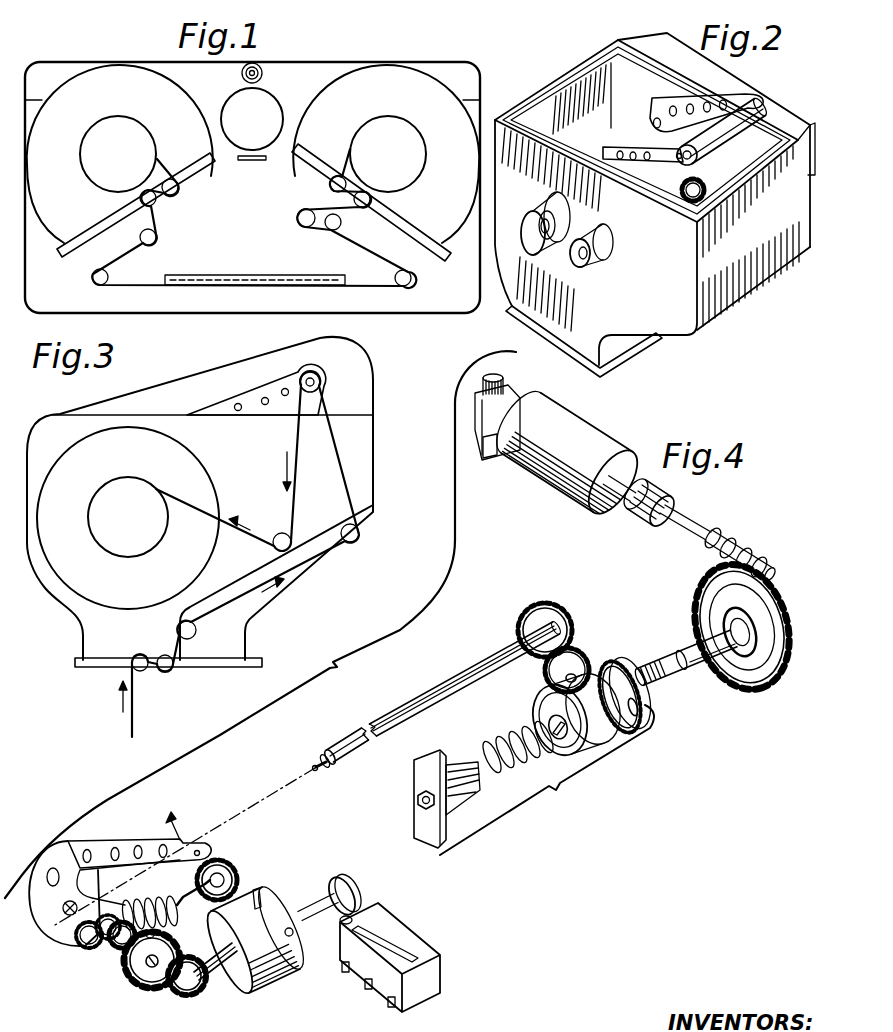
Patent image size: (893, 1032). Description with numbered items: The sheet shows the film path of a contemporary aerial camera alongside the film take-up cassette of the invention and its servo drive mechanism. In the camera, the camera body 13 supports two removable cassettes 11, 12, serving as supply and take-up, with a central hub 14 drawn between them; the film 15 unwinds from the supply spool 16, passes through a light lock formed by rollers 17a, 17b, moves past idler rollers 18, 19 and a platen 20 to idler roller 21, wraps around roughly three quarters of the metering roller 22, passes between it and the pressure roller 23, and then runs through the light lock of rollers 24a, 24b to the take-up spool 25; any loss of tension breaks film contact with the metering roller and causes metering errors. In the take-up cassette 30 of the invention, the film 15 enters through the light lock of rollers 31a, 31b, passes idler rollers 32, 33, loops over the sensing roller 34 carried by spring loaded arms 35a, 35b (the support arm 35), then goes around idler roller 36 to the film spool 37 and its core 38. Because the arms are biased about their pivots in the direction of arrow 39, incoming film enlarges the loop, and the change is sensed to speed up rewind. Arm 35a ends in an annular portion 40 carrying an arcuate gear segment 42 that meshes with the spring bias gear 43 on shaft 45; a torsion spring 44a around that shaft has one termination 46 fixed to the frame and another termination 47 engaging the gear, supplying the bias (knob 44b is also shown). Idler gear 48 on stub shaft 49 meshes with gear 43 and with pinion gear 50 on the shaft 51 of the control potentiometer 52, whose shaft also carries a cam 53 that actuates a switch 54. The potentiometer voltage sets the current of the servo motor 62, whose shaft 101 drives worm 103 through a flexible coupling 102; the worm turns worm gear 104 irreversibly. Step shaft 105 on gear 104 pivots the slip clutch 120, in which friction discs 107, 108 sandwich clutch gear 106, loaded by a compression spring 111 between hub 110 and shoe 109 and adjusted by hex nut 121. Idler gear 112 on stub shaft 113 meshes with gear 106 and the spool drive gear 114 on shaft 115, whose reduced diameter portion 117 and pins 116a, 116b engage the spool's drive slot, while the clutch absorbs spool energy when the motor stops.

In FIG. 1, the supply cassette 11 is at (130, 75).
In FIG. 1, the take-up cassette 12 is at (385, 75).
In FIG. 1, the camera body 13 is at (316, 62).
In FIG. 1, the capstan hub 14 is at (262, 103).
In FIG. 1, the film 15 is at (140, 256).
In FIG. 3, the film 15 is at (343, 437).
In FIG. 1, the supply spool 16 is at (129, 154).
In FIG. 1, the light lock roller 17a is at (158, 203).
In FIG. 1, the light lock roller 17b is at (180, 190).
In FIG. 1, the idler roller 18 is at (140, 238).
In FIG. 1, the idler roller 19 is at (109, 277).
In FIG. 1, the platen 20 is at (232, 277).
In FIG. 1, the idler roller 21 is at (395, 278).
In FIG. 1, the metering roller 22 is at (297, 220).
In FIG. 1, the pressure roller 23 is at (340, 227).
In FIG. 1, the light lock roller 24a is at (330, 186).
In FIG. 1, the light lock roller 24b is at (371, 199).
In FIG. 1, the take-up spool 25 is at (399, 154).
In FIG. 2, the cassette 30 is at (755, 283).
In FIG. 3, the cassette 30 is at (310, 583).
In FIG. 4, the cassette 30 is at (224, 871).
In FIG. 3, the light lock roller 31a is at (145, 672).
In FIG. 3, the light lock roller 31b is at (158, 655).
In FIG. 3, the idler roller 32 is at (196, 633).
In FIG. 3, the idler roller 33 is at (343, 530).
In FIG. 2, the sensing roller 34 is at (770, 101).
In FIG. 3, the sensing roller 34 is at (322, 390).
In FIG. 3, the sensing roller support arm 35 is at (258, 395).
In FIG. 2, the sensing roller support arm 35a is at (713, 98).
In FIG. 4, the sensing roller support arm 35a is at (100, 840).
In FIG. 2, the sensing roller support arm 35b is at (620, 148).
In FIG. 3, the idler roller 36 is at (280, 533).
In FIG. 3, the film spool 37 is at (190, 458).
In FIG. 3, the core 38 is at (137, 545).
In FIG. 3, the arrow 39 is at (314, 372).
In FIG. 4, the arrow 39 is at (180, 826).
In FIG. 4, the annular portion 40 is at (60, 903).
In FIG. 4, the arcuate gear segment 42 is at (88, 950).
In FIG. 2, the spring bias gear 43 is at (704, 186).
In FIG. 4, the spring bias gear 43 is at (118, 955).
In FIG. 2, the torsion spring 44a is at (545, 223).
In FIG. 4, the torsion spring 44a is at (171, 937).
In FIG. 2, the knob 44b is at (585, 263).
In FIG. 4, the shaft 45 is at (104, 948).
In FIG. 4, the spring termination 46 is at (193, 887).
In FIG. 4, the spring termination 47 is at (134, 906).
In FIG. 4, the idler gear 48 is at (135, 968).
In FIG. 4, the stub shaft 49 is at (150, 975).
In FIG. 4, the pinion gear 50 is at (184, 990).
In FIG. 4, the potentiometer shaft 51 is at (218, 988).
In FIG. 4, the control potentiometer 52 is at (242, 988).
In FIG. 4, the cam 53 is at (363, 897).
In FIG. 4, the switch 54 is at (410, 941).
In FIG. 4, the servo motor 62 is at (533, 473).
In FIG. 4, the motor shaft 101 is at (613, 487).
In FIG. 4, the flexible coupling 102 is at (662, 495).
In FIG. 4, the worm 103 is at (747, 547).
In FIG. 4, the worm gear 104 is at (697, 586).
In FIG. 4, the step shaft 105 is at (683, 667).
In FIG. 4, the clutch gear 106 is at (638, 704).
In FIG. 4, the friction disc 107 is at (626, 668).
In FIG. 4, the friction disc 108 is at (540, 700).
In FIG. 4, the shoe 109 is at (546, 726).
In FIG. 4, the hub 110 is at (458, 767).
In FIG. 4, the compression spring 111 is at (493, 743).
In FIG. 4, the idler gear 112 is at (585, 655).
In FIG. 4, the stub shaft 113 is at (565, 680).
In FIG. 4, the spool drive gear 114 is at (553, 605).
In FIG. 4, the shaft 115 is at (482, 665).
In FIG. 4, the pin 116a is at (327, 758).
In FIG. 4, the pin 116b is at (328, 770).
In FIG. 4, the reduced diameter portion 117 is at (312, 767).
In FIG. 4, the slip clutch 120 is at (548, 787).
In FIG. 4, the hex nut 121 is at (414, 805).